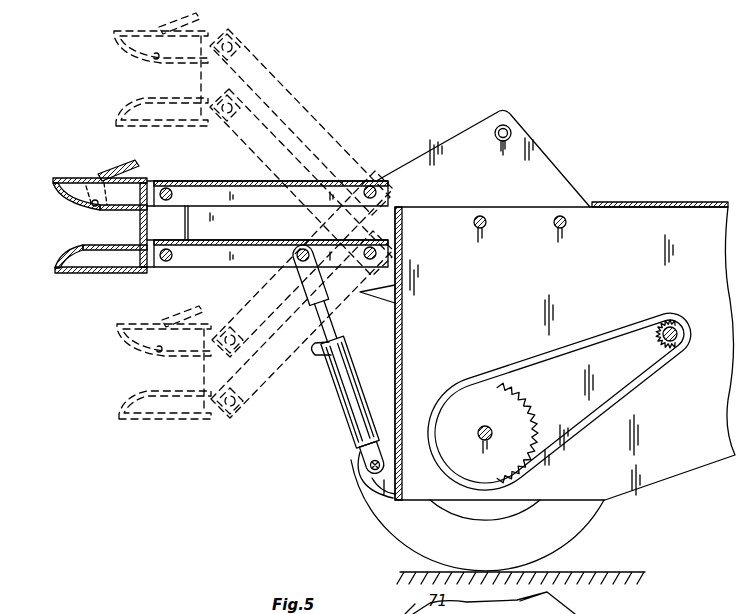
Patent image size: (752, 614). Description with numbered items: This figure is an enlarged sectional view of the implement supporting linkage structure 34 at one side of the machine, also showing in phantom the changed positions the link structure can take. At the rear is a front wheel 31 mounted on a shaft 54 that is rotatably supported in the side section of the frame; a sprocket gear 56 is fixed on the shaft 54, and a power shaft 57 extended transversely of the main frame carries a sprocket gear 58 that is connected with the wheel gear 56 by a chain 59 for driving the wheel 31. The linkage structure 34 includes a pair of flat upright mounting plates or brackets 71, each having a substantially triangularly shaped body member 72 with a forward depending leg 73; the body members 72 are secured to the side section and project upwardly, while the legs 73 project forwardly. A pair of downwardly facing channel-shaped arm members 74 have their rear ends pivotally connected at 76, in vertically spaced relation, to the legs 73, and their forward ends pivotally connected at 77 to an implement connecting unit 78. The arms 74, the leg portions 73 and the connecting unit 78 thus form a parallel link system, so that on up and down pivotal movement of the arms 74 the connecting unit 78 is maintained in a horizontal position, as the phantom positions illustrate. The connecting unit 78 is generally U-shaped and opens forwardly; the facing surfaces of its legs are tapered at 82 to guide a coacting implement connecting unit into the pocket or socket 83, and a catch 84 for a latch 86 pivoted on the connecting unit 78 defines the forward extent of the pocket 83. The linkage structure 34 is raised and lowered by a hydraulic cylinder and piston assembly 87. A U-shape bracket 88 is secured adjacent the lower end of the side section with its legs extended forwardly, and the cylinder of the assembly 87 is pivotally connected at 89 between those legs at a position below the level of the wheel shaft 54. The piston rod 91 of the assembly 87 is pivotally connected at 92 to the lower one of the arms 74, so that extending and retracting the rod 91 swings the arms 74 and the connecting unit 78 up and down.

The dual wheels 31 is at (575, 530).
The implement supporting linkage structure 34 is at (146, 159).
The shaft 54 is at (484, 424).
The sprocket gear 56 is at (525, 405).
The power shaft 57 is at (672, 318).
The sprocket gear 58 is at (656, 342).
The chain 59 is at (586, 340).
The mounting plates or brackets 71 is at (545, 148).
The body member 72 is at (466, 138).
The forward depending leg 73 is at (400, 280).
The arm members 74 is at (250, 183).
The pivotal connection 76 is at (378, 185).
The arm pivots 77 is at (167, 188).
The implement connecting unit 78 is at (118, 68).
The tapered forward ends 82 is at (63, 197).
The pocket or socket 83 is at (130, 242).
The catch 84 is at (100, 217).
The latch 86 is at (113, 175).
The hydraulic cylinder and piston assembly 87 is at (343, 393).
The U-shape bracket 88 is at (377, 486).
The cylinder pivotal connection 89 is at (371, 466).
The piston rod 91 is at (314, 344).
The piston rod pivotal connection 92 is at (294, 262).